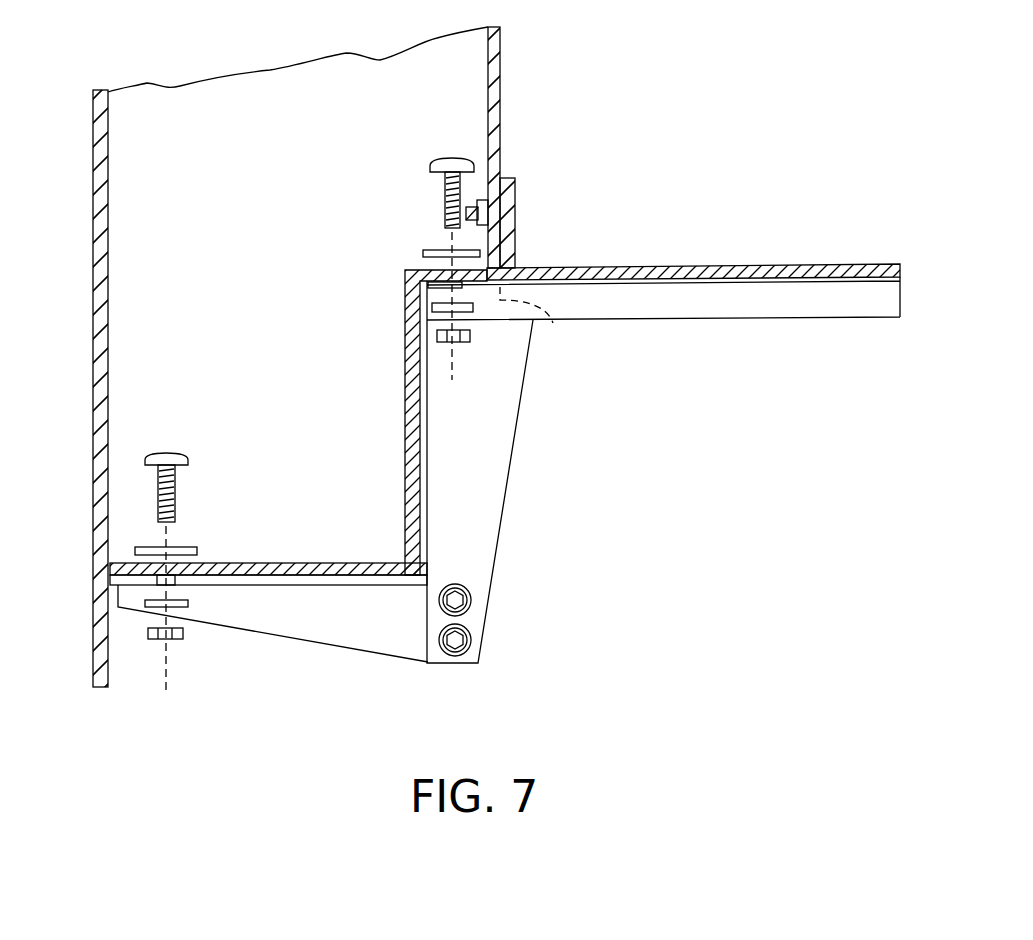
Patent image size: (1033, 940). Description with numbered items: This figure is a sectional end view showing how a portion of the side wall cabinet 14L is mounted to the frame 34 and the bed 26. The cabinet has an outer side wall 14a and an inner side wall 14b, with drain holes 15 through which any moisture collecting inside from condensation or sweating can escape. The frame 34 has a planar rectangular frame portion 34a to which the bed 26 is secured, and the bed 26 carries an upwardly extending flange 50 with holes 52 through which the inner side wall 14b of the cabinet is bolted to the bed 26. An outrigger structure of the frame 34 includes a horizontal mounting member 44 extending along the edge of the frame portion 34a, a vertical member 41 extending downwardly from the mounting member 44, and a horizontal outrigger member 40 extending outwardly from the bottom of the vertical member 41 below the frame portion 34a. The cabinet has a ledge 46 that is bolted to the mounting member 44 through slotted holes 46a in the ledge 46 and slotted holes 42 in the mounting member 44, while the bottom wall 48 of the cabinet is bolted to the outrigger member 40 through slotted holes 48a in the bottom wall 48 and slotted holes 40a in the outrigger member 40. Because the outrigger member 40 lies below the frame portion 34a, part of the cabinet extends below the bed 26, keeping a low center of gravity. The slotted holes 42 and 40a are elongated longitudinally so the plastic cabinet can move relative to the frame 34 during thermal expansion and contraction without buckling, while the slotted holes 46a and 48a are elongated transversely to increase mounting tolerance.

The side wall cabinet 14L is at (145, 76).
The outer side wall 14a is at (90, 200).
The inner side wall 14b is at (500, 76).
The drain holes 15 is at (268, 520).
The bed 26 is at (773, 264).
The frame 34 is at (663, 357).
The frame portion 34a is at (766, 320).
The horizontal outrigger member 40 is at (360, 643).
The slotted holes 40a is at (197, 600).
The vertical member 41 is at (500, 503).
The slotted holes 42 is at (450, 292).
The horizontal mounting member 44 is at (553, 323).
The ledge 46 is at (427, 270).
The slotted holes 46a is at (447, 255).
The bottom wall 48 is at (282, 563).
The slotted holes 48a is at (172, 566).
The flange 50 is at (517, 248).
The holes 52 is at (515, 207).